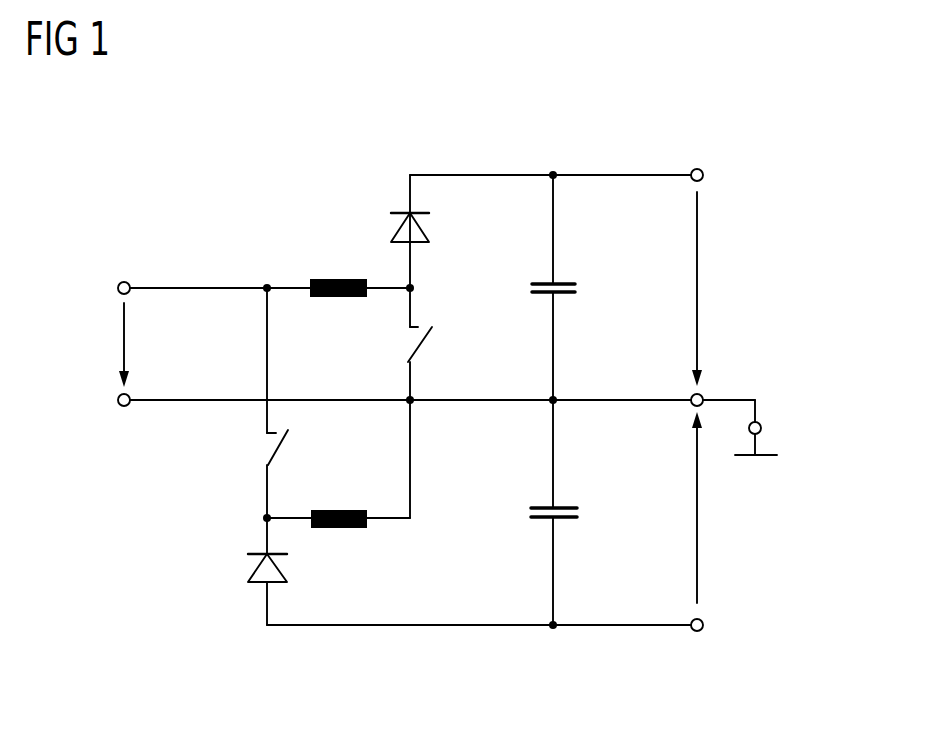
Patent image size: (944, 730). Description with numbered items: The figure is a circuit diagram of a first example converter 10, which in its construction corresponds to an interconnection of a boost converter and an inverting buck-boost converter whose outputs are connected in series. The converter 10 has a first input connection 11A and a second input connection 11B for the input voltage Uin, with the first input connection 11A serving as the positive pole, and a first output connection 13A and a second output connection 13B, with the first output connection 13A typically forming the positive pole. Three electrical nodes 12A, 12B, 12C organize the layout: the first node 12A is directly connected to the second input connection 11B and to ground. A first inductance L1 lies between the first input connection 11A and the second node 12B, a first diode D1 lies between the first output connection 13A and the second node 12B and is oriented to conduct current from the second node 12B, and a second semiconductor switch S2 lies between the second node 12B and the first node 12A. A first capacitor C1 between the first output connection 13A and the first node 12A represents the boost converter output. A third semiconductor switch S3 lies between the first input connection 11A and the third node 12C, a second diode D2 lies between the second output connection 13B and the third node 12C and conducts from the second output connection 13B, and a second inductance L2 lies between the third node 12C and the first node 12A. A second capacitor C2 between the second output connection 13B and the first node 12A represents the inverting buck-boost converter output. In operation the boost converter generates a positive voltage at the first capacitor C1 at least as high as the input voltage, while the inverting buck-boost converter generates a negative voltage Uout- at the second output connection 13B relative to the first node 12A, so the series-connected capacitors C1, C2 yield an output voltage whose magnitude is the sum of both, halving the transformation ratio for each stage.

The converter 10 is at (141, 136).
The first input connection 11A is at (118, 288).
The second input connection 11B is at (118, 400).
The first node 12A is at (550, 403).
The second node 12B is at (416, 288).
The third node 12C is at (262, 518).
The first output connection 13A is at (703, 175).
The second output connection 13B is at (703, 625).
The first inductance L1 is at (344, 279).
The second inductance L2 is at (340, 530).
The first diode D1 is at (428, 228).
The second diode D2 is at (254, 566).
The second semiconductor switch S2 is at (427, 346).
The third semiconductor switch S3 is at (283, 452).
The first capacitor C1 is at (565, 296).
The second capacitor C2 is at (560, 521).
The input voltage Uin is at (122, 338).
The negative output voltage Uout- is at (697, 520).